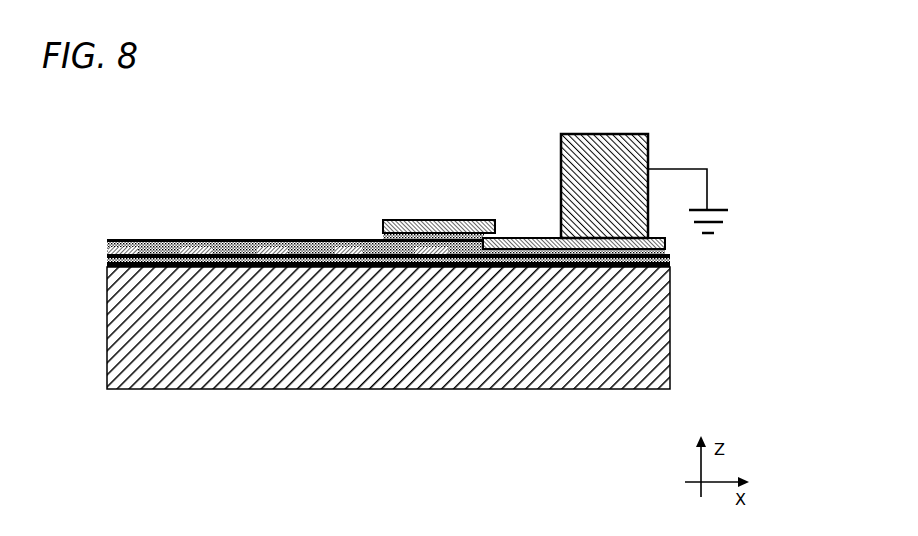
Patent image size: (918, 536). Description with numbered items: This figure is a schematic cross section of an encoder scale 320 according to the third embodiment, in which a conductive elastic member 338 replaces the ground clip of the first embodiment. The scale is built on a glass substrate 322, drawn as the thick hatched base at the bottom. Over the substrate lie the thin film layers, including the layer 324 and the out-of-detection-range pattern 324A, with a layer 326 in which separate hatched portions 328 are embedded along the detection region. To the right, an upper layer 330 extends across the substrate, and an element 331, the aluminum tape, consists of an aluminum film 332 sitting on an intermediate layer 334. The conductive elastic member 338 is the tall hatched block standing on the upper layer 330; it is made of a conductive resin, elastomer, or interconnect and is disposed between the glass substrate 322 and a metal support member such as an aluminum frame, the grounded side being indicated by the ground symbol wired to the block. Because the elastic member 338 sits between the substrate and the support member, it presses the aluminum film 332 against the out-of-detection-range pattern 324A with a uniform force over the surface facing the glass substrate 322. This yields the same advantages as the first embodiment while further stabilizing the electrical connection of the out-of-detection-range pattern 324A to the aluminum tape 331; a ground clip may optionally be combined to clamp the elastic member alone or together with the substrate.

The piezoelectric device 320 is at (401, 263).
The glass substrate 322 is at (117, 343).
The lower electrode layer 324 is at (148, 250).
The out-of-detection-range pattern 324A is at (640, 270).
The piezoelectric layer 326 is at (200, 243).
The embedded electrode portions 328 is at (244, 243).
The upper electrode layer 330 is at (488, 160).
The aluminum tape 331 is at (406, 197).
The aluminum film 332 is at (415, 226).
The adhesion layer 334 is at (383, 229).
The conductive elastic member 338 is at (637, 152).